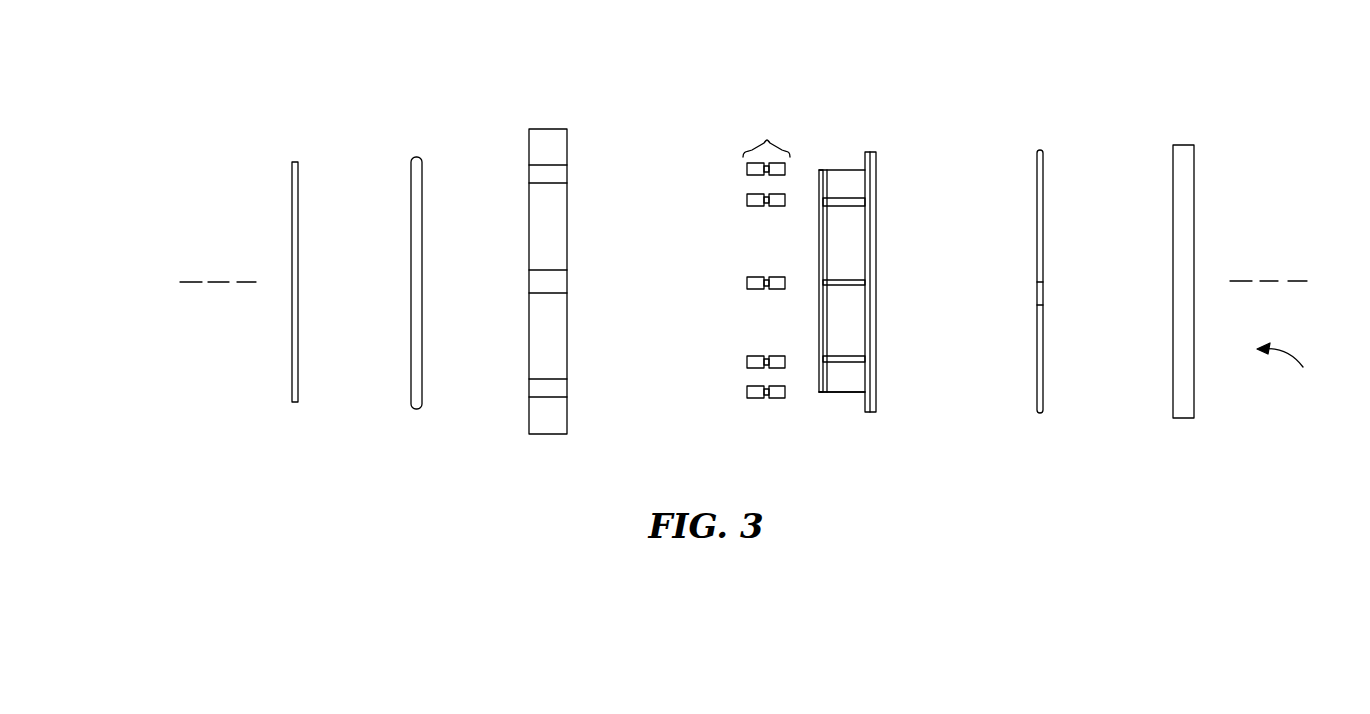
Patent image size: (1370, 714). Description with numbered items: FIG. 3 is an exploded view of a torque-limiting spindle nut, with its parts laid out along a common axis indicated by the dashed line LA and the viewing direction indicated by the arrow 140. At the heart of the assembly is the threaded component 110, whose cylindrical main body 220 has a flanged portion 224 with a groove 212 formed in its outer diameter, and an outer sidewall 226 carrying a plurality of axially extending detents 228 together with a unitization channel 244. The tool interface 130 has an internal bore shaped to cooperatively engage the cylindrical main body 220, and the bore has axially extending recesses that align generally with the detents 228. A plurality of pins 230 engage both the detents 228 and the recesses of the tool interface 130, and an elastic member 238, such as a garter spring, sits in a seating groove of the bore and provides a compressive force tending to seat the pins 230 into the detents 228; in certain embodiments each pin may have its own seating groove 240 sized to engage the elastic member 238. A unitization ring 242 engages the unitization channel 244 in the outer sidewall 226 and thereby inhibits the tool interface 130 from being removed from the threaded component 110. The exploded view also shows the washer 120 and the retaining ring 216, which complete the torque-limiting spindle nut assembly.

The threaded component 110 is at (847, 280).
The washer 120 is at (1181, 143).
The tool interface 130 is at (548, 128).
The viewing direction 140 is at (1291, 369).
The groove 212 is at (876, 418).
The retaining ring 216 is at (1038, 148).
The cylindrical main body 220 is at (845, 385).
The flanged portion 224 is at (922, 310).
The outer sidewall 226 is at (838, 241).
The axially extending detents 228 is at (865, 283).
The pins 230 is at (766, 240).
The elastic member 238 is at (416, 155).
The seating groove 240 is at (748, 394).
The unitization ring 242 is at (295, 160).
The unitization channel 244 is at (818, 322).
The light axis LA is at (1268, 280).